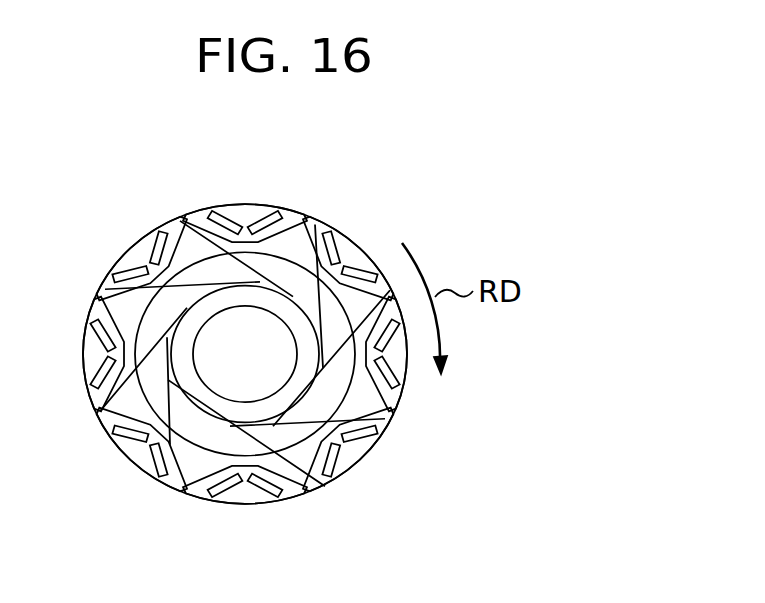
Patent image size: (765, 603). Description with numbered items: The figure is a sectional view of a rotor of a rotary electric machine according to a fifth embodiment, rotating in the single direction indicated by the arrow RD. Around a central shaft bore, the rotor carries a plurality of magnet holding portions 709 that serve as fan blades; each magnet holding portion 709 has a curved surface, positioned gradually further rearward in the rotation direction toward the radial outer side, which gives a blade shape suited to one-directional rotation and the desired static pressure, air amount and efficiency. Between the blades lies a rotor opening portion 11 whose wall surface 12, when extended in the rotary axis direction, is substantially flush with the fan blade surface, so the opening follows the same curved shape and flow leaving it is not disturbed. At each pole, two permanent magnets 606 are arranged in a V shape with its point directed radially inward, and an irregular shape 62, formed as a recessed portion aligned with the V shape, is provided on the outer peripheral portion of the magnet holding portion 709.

The rotor opening portion 11 is at (292, 275).
The wall surface 12 is at (379, 438).
The irregular shape 62 is at (245, 206).
The permanent magnet 606 is at (228, 212).
The magnet holding portion 709 is at (190, 245).